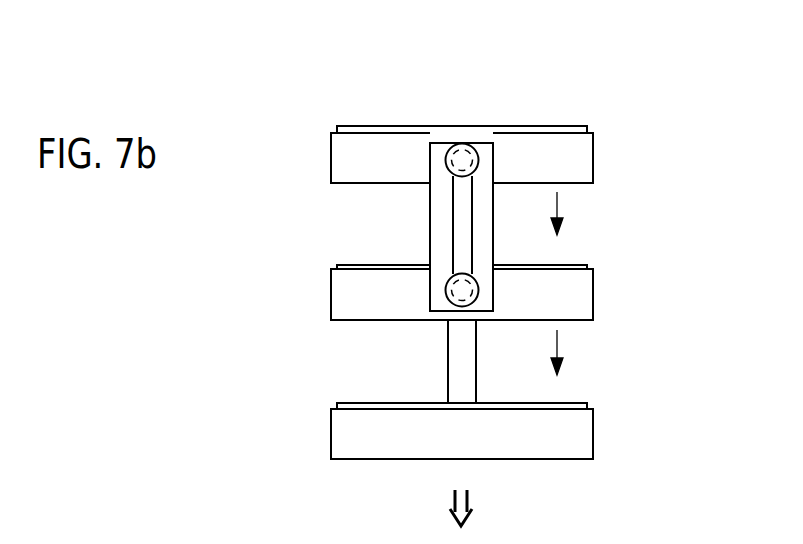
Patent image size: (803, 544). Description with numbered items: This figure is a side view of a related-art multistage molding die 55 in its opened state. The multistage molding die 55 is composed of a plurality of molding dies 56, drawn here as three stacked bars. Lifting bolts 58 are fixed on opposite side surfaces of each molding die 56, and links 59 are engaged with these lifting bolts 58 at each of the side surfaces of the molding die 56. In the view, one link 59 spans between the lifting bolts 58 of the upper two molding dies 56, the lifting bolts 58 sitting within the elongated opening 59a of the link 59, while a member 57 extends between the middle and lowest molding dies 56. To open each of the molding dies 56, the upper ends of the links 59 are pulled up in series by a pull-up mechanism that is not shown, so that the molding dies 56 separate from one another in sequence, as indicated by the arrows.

The multistage molding die 55 is at (619, 124).
The molding die 56 is at (590, 153).
The support post 57 is at (455, 368).
The lifting bolt 58 is at (455, 143).
The link 59 is at (435, 205).
The slot 59a is at (456, 252).